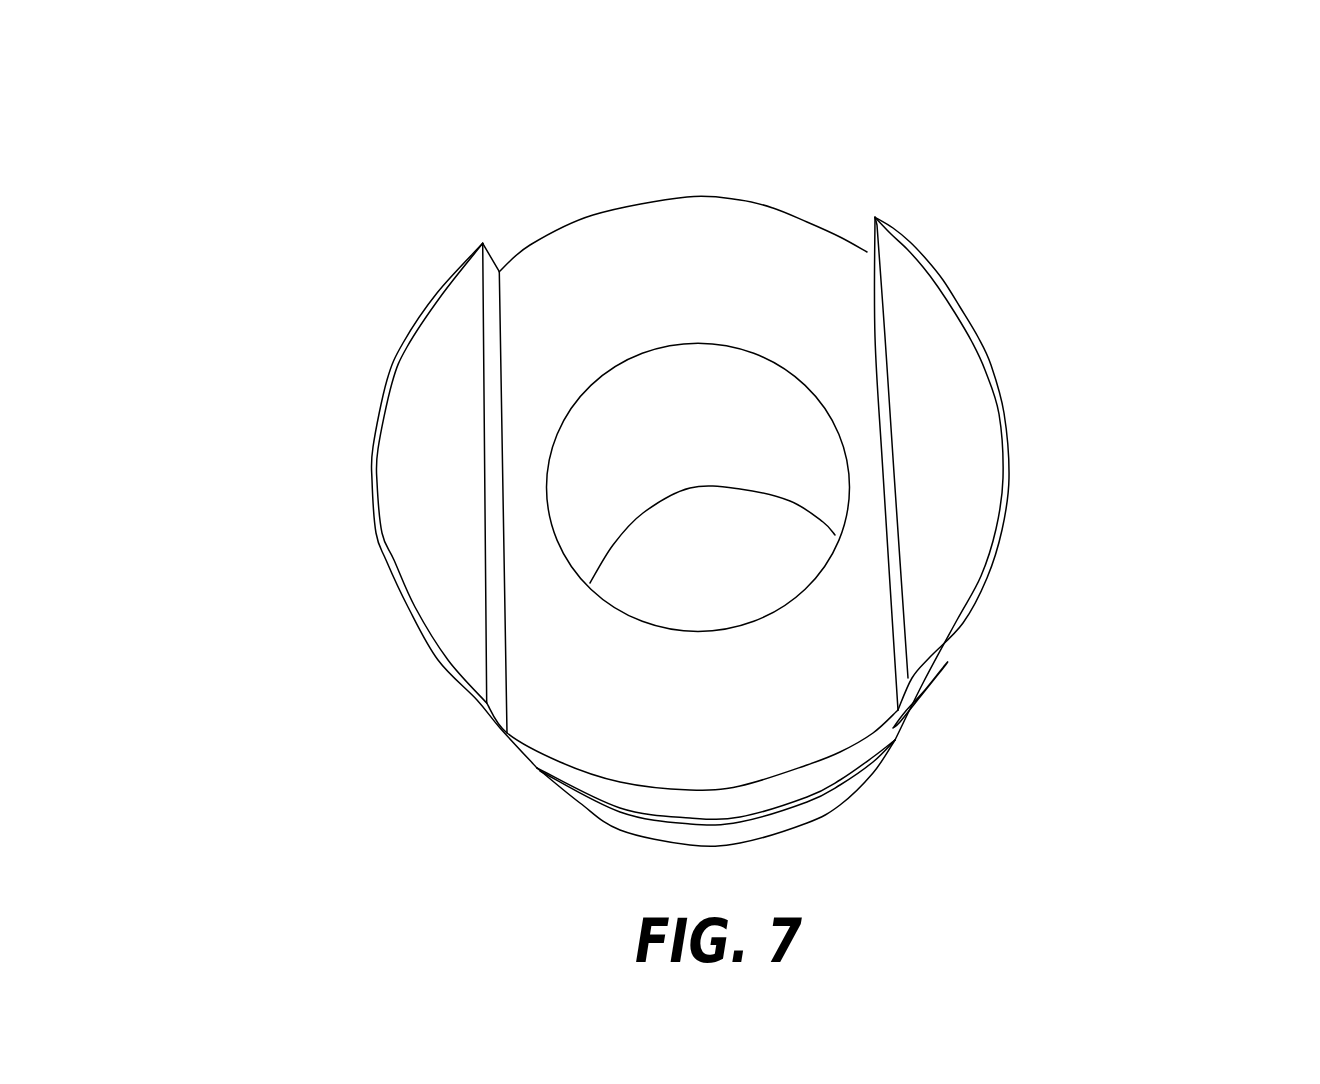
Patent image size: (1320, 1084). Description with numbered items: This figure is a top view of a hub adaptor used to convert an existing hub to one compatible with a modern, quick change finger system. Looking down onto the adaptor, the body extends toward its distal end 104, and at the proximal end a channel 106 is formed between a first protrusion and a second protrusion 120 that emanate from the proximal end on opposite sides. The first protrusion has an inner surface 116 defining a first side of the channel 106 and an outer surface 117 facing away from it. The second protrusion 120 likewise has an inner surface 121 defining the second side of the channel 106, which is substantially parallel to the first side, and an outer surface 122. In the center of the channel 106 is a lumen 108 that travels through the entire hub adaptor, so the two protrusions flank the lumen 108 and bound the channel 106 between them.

The distal end 104 is at (620, 293).
The channel 106 is at (743, 268).
The lumen 108 is at (637, 462).
The inner surface 116 is at (487, 583).
The outer surface 117 is at (377, 537).
The second protrusion 120 is at (947, 415).
The inner surface 121 is at (893, 510).
The outer surface 122 is at (1007, 497).